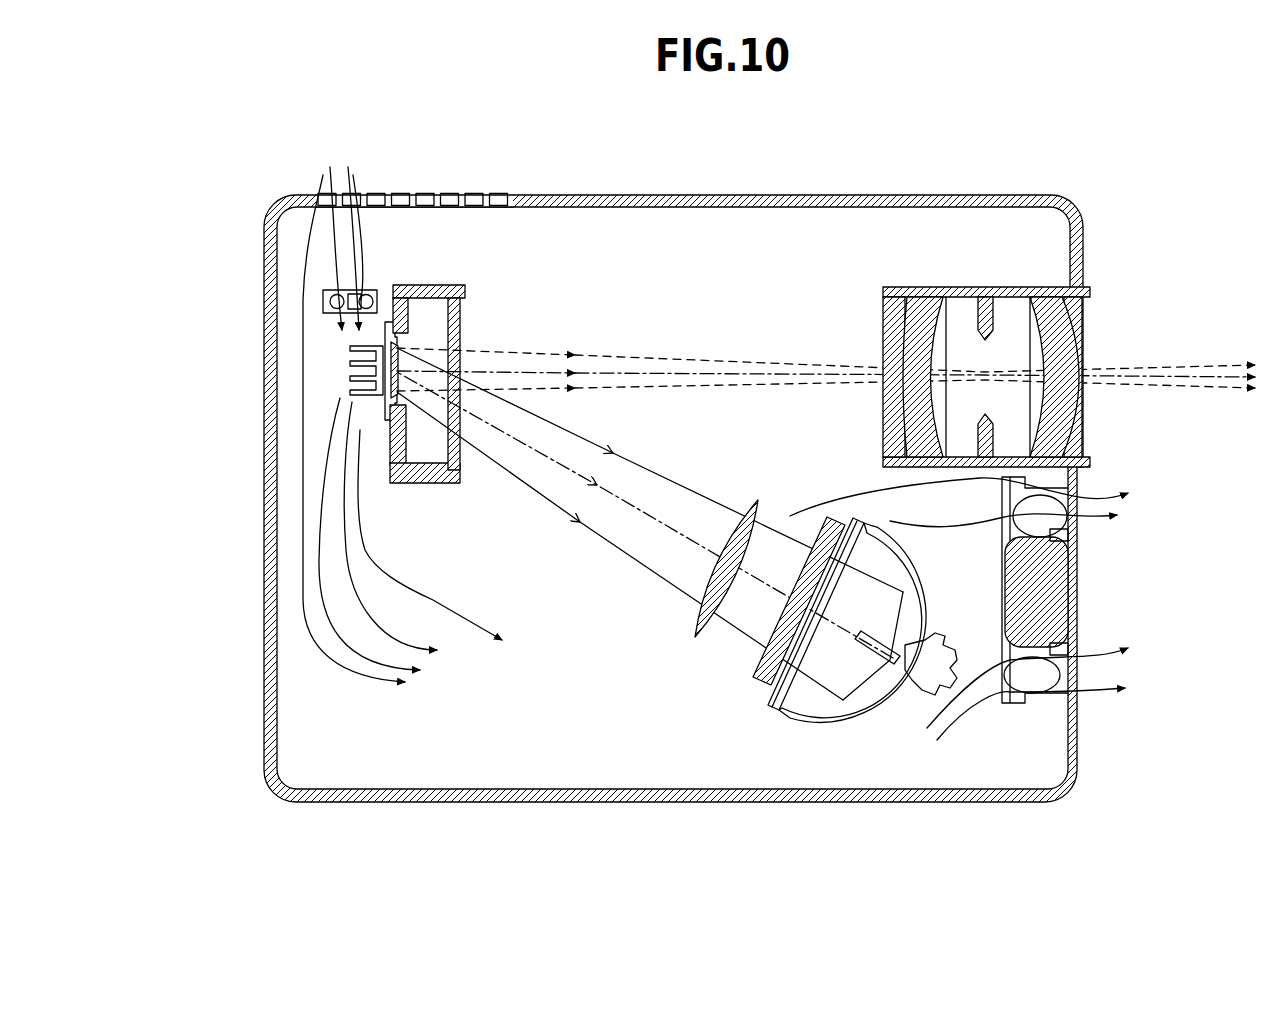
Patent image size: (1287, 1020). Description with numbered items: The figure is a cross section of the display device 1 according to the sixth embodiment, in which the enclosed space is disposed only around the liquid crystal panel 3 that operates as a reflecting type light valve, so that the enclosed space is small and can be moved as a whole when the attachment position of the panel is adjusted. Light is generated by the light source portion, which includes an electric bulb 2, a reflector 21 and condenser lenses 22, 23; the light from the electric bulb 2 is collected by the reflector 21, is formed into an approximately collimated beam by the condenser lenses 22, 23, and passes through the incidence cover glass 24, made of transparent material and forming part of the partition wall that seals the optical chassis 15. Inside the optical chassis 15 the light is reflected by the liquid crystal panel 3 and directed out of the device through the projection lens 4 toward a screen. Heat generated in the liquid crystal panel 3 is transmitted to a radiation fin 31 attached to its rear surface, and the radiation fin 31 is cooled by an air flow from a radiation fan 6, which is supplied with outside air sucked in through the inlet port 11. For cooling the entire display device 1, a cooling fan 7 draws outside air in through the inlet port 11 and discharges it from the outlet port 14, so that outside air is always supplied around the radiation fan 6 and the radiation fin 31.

The display device 1 is at (496, 803).
The electric bulb 2 is at (937, 657).
The liquid crystal panel 3 is at (387, 407).
The projection lens 4 is at (975, 320).
The radiation fan 6 is at (350, 290).
The cooling fan 7 is at (1077, 572).
The inlet port 11 is at (483, 196).
The outlet port 14 is at (1078, 675).
The optical chassis 15 is at (430, 285).
The reflector 21 is at (868, 707).
The condenser lens 22 is at (760, 683).
The condenser lens 23 is at (707, 640).
The incidence cover glass 24 is at (463, 317).
The radiation fin 31 is at (350, 382).